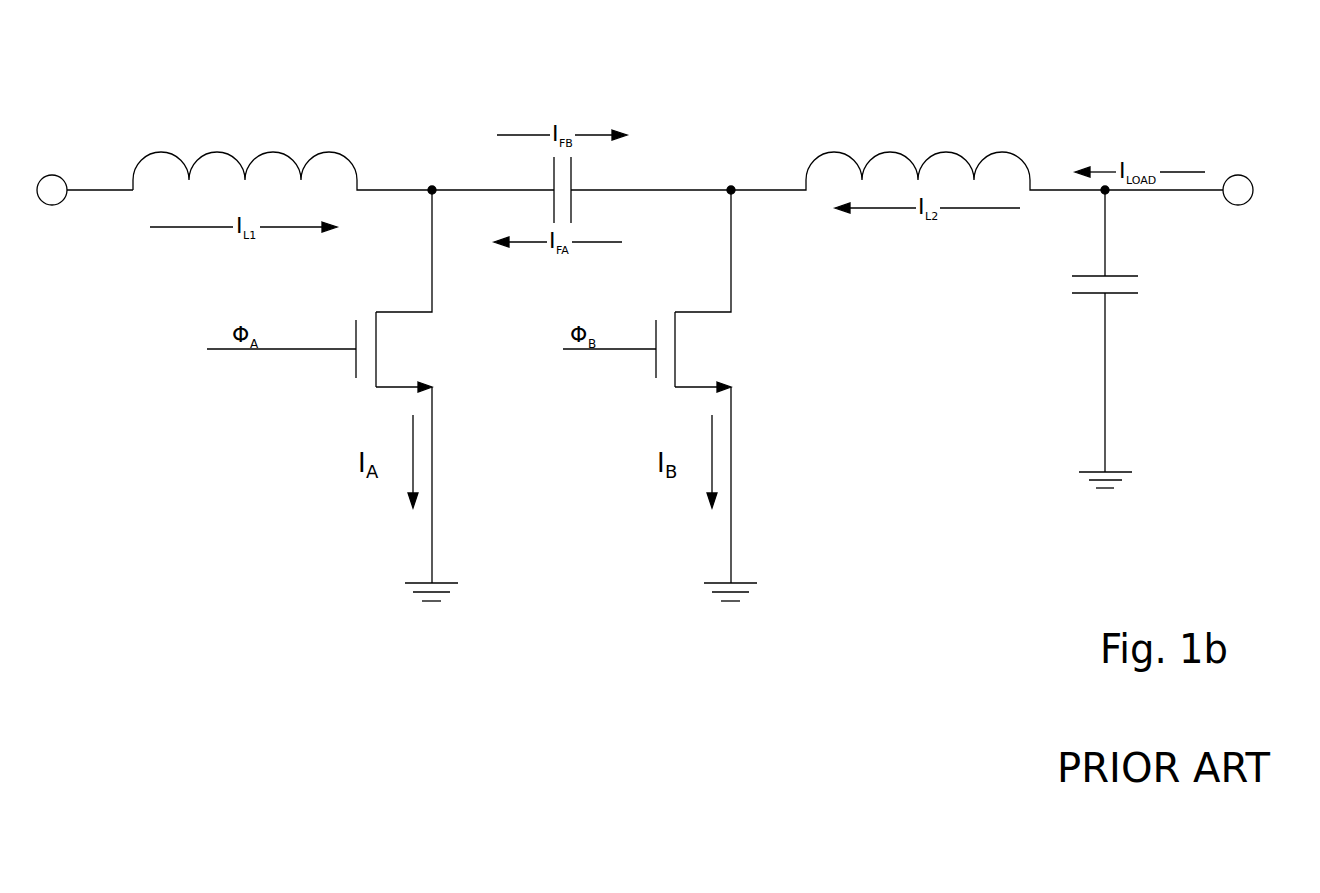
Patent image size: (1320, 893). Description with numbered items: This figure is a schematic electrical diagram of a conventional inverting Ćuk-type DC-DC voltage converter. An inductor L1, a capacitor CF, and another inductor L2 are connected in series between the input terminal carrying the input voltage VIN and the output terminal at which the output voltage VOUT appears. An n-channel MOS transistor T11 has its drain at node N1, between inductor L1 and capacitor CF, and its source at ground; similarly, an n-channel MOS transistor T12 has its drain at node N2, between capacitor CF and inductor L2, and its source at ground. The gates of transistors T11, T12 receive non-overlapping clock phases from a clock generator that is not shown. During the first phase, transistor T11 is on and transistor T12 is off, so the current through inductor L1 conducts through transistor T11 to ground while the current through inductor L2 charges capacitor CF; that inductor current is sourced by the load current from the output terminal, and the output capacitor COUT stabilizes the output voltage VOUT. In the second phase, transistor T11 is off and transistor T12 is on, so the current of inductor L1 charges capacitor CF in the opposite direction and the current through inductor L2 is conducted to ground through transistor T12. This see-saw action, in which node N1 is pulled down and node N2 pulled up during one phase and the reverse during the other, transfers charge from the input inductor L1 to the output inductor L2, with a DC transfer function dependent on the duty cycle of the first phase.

The input voltage terminal VIN is at (85, 170).
The inductor L1 is at (265, 162).
The node N1 is at (435, 185).
The capacitor CF is at (585, 185).
The node N2 is at (735, 185).
The inductor L2 is at (935, 152).
The output voltage VOUT is at (1203, 204).
The output capacitor COUT is at (1143, 289).
The n-channel MOS transistor T11 is at (433, 342).
The n-channel MOS transistor T12 is at (731, 349).